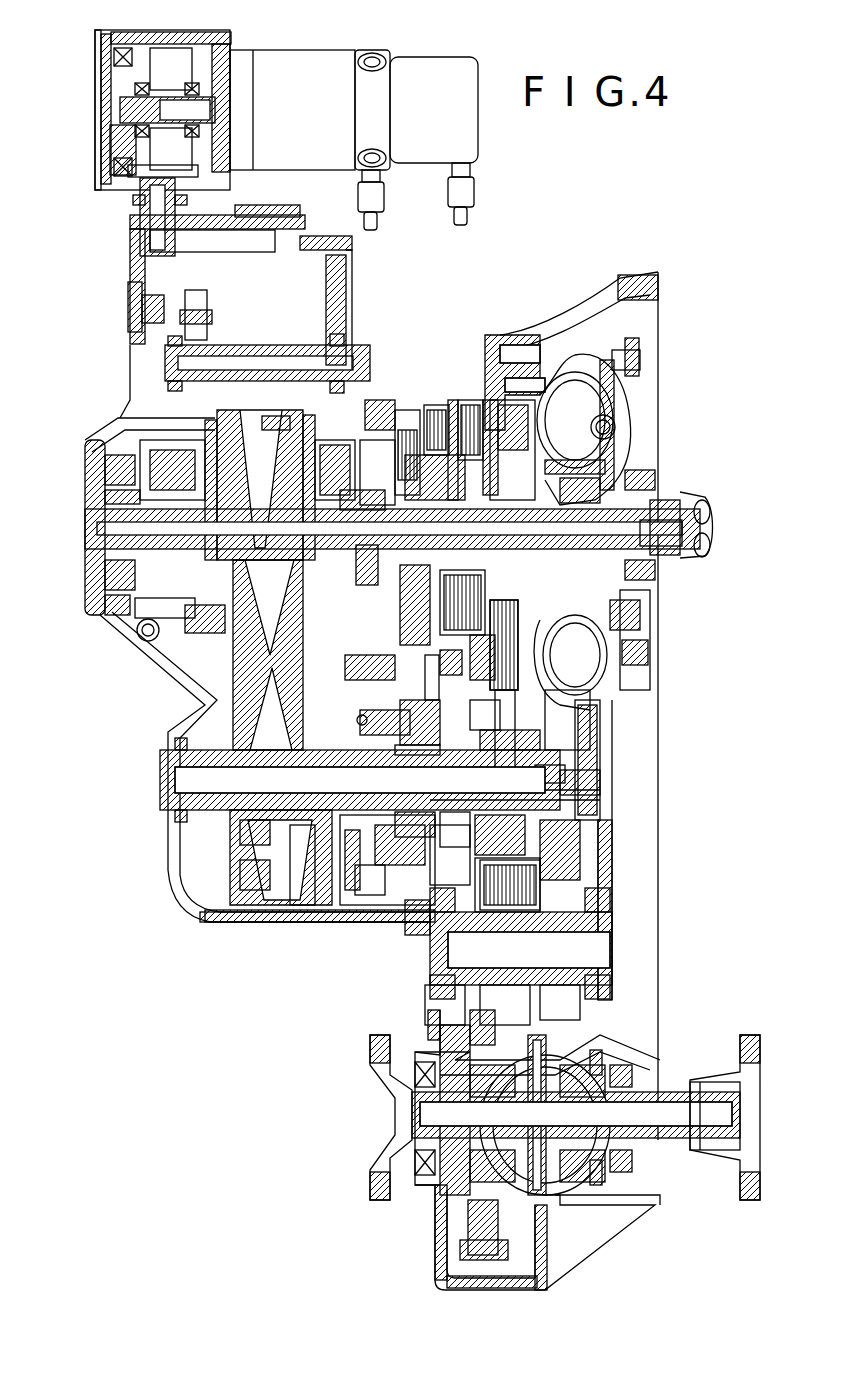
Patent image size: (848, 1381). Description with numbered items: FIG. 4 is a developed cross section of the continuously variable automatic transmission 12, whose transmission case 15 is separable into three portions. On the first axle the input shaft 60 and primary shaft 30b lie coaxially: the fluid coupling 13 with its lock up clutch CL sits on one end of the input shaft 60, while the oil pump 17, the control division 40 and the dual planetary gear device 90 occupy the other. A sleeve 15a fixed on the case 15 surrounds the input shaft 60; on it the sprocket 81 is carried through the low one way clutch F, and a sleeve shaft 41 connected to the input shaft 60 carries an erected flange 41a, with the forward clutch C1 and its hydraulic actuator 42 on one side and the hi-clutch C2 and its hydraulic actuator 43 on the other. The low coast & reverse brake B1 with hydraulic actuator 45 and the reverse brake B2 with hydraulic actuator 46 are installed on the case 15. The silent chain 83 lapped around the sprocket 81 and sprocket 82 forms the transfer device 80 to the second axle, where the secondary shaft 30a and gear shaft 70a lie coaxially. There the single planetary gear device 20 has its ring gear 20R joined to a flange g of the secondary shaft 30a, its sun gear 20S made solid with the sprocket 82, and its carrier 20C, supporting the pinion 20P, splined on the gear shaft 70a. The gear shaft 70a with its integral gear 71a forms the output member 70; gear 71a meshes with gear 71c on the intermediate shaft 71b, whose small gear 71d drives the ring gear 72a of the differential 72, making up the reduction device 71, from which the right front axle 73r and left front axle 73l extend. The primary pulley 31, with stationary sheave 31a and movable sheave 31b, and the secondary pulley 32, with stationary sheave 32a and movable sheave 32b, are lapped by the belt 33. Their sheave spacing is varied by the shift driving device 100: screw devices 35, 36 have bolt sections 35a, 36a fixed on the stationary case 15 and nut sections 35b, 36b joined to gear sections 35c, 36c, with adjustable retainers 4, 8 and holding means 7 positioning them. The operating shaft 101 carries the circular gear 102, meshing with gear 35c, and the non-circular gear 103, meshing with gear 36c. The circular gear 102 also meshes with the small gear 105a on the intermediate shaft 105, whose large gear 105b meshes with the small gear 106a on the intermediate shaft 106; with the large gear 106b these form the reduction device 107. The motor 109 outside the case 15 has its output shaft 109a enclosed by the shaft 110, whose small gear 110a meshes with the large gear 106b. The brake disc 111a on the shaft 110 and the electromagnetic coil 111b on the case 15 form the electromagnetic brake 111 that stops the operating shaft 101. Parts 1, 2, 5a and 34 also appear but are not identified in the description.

The pulley element 1 is at (318, 440).
The pulley element 2 is at (318, 470).
The adjustable retainer 4 is at (105, 470).
The oil passage 5a is at (105, 496).
The holding means 7 is at (372, 668).
The adjustable retainer 8 is at (405, 716).
The continuously variable automatic transmission 12 is at (538, 243).
The fluid coupling 13 is at (580, 340).
The transmission case 15 is at (332, 945).
The sleeve 15a is at (660, 545).
The oil pump 17 is at (590, 470).
The single planetary gear device 20 is at (505, 660).
The carrier 20C is at (400, 812).
The pinion 20P is at (508, 898).
The ring gear 20R is at (521, 968).
The sun gear 20S is at (560, 858).
The secondary shaft 30a is at (172, 772).
The primary shaft 30b is at (95, 520).
The primary pulley 31 is at (236, 418).
The stationary sheave 31a is at (306, 418).
The movable sheave 31b is at (215, 425).
The secondary pulley 32 is at (272, 910).
The stationary sheave 32a is at (252, 872).
The movable sheave 32b is at (300, 912).
The belt 33 is at (255, 912).
The pulley cone 34 is at (318, 580).
The screw device 35 is at (172, 612).
The bolt section 35a is at (105, 566).
The nut section 35b is at (100, 612).
The circular gear 35c is at (205, 630).
The screw device 36 is at (355, 920).
The bolt section 36a is at (372, 712).
The nut section 36b is at (380, 870).
The noncircular gear 36c is at (345, 870).
The control division 40 is at (510, 335).
The sleeve shaft 41 is at (345, 590).
The flange 41a is at (452, 398).
The hydraulic actuator 42 is at (458, 660).
The hydraulic actuator 43 is at (645, 652).
The hydraulic actuator 45 is at (484, 660).
The hydraulic actuator 46 is at (372, 398).
The input shaft 60 is at (688, 502).
The output member 70 is at (602, 830).
The gear shaft 70a is at (605, 778).
The reduction device 71 is at (420, 1006).
The gear 71a is at (592, 745).
The intermediate shaft 71b is at (592, 905).
The gear 71c is at (560, 985).
The small gear 71d is at (438, 996).
The differential 72 is at (588, 1045).
The ring gear 72a is at (445, 1022).
The left front axle 73l is at (392, 1085).
The right front axle 73r is at (735, 1078).
The transfer device 80 is at (575, 655).
The sprocket 81 is at (600, 630).
The sprocket 82 is at (500, 735).
The silent chain 83 is at (555, 672).
The dual planetary gear device 90 is at (420, 398).
The shift driving device 100 is at (96, 180).
The operating shaft 101 is at (265, 345).
The circular gear 102 is at (196, 320).
The non-circular gear 103 is at (328, 292).
The intermediate shaft 105 is at (225, 250).
The small gear 105a is at (258, 214).
The large gear 105b is at (142, 318).
The intermediate shaft 106 is at (136, 200).
The small gear 106a is at (138, 232).
The large gear 106b is at (198, 176).
The reduction device 107 is at (126, 293).
The motor 109 is at (292, 50).
The output shaft 109a is at (200, 112).
The shaft 110 is at (98, 110).
The small gear 110a is at (175, 32).
The electromagnetic brake 111 is at (96, 36).
The brake disc 111a is at (98, 56).
The electromagnetic coil 111b is at (132, 40).
The low coast & reverse brake B1 is at (486, 398).
The reverse brake B2 is at (402, 408).
The forward clutch C1 is at (436, 405).
The hi-clutch C2 is at (466, 400).
The lock up clutch CL is at (640, 365).
The low one way clutch F is at (512, 450).
The flange g is at (412, 935).